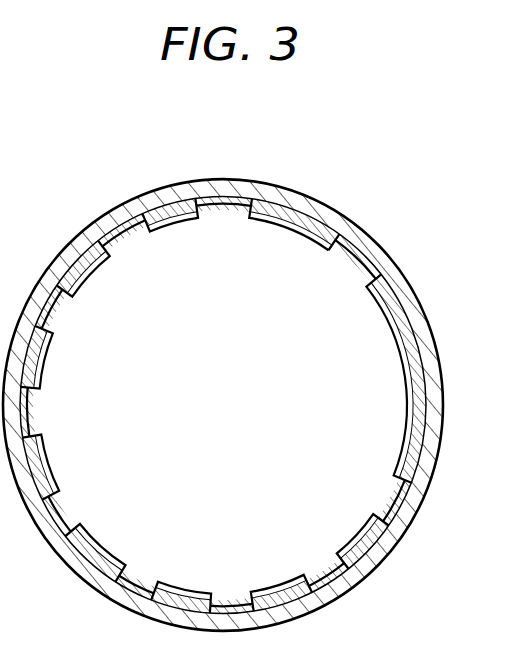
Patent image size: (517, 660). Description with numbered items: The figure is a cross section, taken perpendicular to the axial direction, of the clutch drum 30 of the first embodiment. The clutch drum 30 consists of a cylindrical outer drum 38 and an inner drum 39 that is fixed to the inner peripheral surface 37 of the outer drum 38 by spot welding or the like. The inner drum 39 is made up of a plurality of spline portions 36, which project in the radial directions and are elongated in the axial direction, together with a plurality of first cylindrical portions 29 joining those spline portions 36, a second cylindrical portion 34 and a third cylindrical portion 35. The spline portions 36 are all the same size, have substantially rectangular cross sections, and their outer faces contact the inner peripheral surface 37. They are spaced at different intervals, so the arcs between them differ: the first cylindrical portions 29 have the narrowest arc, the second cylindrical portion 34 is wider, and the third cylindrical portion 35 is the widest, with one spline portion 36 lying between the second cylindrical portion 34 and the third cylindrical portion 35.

The clutch drum 30 is at (245, 370).
The outer drum 38 is at (223, 376).
The inner peripheral surface 37 is at (253, 405).
The inner drum 39 is at (343, 200).
The spline portions 36 is at (205, 388).
The first cylindrical portions 29 is at (211, 249).
The second cylindrical portion 34 is at (290, 253).
The third cylindrical portion 35 is at (223, 405).